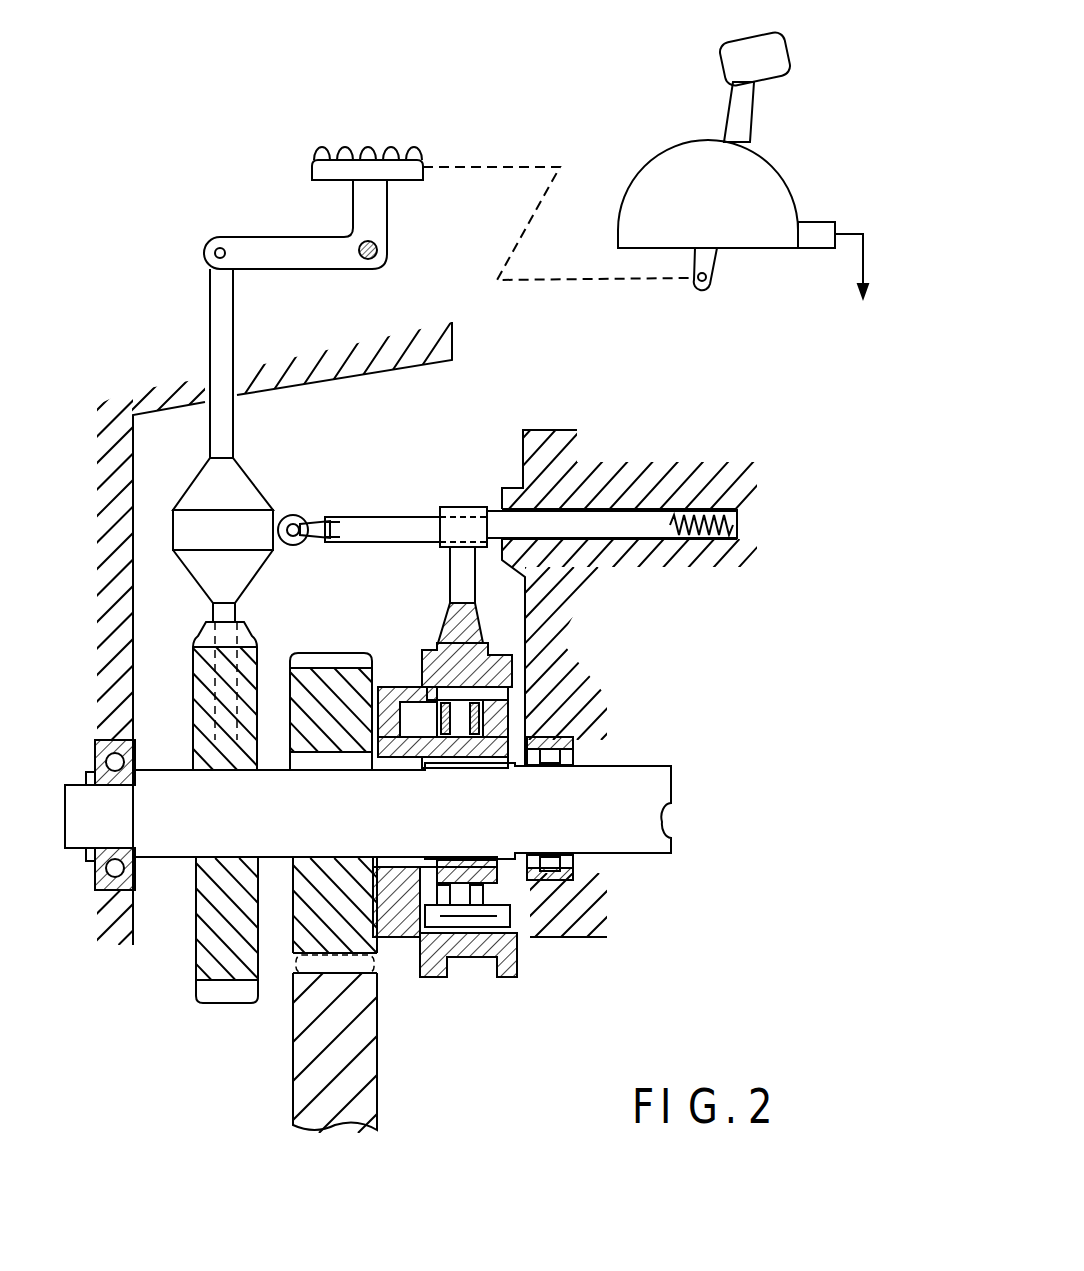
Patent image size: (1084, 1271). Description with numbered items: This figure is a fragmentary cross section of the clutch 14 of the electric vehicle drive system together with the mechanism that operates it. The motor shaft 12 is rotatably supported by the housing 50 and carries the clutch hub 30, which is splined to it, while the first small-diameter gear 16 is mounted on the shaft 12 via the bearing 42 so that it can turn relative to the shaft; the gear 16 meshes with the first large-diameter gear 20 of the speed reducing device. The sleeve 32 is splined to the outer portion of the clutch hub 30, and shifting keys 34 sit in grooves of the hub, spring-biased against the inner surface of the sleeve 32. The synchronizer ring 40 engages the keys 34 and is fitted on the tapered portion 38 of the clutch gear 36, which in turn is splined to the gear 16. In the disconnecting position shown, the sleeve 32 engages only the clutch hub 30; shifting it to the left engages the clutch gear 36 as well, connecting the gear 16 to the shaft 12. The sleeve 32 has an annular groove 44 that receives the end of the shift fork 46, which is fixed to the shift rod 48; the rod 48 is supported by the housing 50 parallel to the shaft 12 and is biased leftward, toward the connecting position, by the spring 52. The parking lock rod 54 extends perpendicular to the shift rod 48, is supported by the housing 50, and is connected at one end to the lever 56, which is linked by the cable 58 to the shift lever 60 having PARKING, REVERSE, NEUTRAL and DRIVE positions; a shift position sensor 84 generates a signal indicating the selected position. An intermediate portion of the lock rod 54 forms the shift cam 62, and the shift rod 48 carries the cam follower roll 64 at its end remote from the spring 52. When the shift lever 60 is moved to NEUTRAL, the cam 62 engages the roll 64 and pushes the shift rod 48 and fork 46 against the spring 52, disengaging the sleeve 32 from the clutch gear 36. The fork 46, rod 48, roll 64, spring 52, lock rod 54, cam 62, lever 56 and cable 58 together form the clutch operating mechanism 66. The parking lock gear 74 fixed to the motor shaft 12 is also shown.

The motor shaft 12 is at (623, 778).
The clutch 14 is at (553, 967).
The first small-diameter gear 16 is at (310, 665).
The first large-diameter gear 20 is at (355, 1038).
The clutch hub 30 is at (555, 905).
The sleeve 32 is at (503, 640).
The shifting keys 34 is at (497, 697).
The clutch gear 36 is at (383, 690).
The tapered portion 38 is at (423, 688).
The synchronizer ring 40 is at (412, 905).
The bearing 42 is at (290, 925).
The annular groove 44 is at (492, 963).
The shift fork 46 is at (452, 580).
The shift rod 48 is at (410, 520).
The housing 50 is at (540, 465).
The spring 52 is at (692, 520).
The parking lock rod 54 is at (220, 339).
The lever 56 is at (318, 162).
The cable 58 is at (522, 163).
The shift lever 60 is at (737, 100).
The shift cam 62 is at (178, 528).
The cam follower roll 64 is at (296, 513).
The clutch operating mechanism 66 is at (183, 170).
The parking lock gear 74 is at (205, 928).
The shift position sensor 84 is at (817, 228).